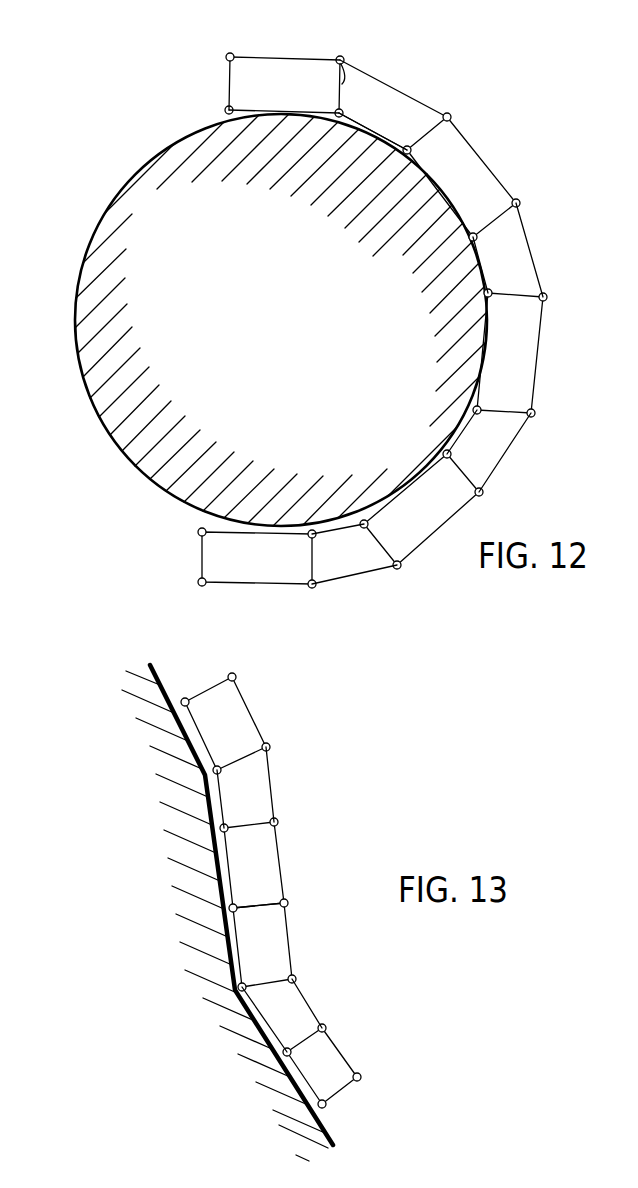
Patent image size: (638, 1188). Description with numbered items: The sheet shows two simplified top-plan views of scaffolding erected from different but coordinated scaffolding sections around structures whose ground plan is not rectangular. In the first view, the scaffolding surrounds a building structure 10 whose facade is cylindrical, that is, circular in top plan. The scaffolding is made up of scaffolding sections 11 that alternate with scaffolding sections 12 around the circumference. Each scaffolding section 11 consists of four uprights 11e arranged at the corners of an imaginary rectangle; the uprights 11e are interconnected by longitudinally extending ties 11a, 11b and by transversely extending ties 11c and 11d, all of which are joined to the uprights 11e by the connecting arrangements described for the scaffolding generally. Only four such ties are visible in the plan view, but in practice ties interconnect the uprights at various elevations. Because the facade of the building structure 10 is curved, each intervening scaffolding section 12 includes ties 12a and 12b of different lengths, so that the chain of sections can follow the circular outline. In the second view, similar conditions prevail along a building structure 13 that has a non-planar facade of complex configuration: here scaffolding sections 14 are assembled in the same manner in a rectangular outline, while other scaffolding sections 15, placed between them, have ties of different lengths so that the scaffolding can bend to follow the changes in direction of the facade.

In FIG. 12, the building structure 10 is at (198, 418).
In FIG. 12, the scaffolding section 11 is at (297, 55).
In FIG. 12, the longitudinally extending tie 11a is at (260, 56).
In FIG. 12, the longitudinally extending tie 11b is at (278, 114).
In FIG. 12, the transversely extending tie 11c is at (342, 84).
In FIG. 12, the transversely extending tie 11d is at (228, 85).
In FIG. 12, the upright 11e is at (227, 54).
In FIG. 12, the scaffolding section 12 is at (412, 89).
In FIG. 12, the tie 12a is at (447, 116).
In FIG. 12, the tie 12b is at (361, 133).
In FIG. 13, the building structure 13 is at (190, 803).
In FIG. 13, the scaffolding section 14 is at (251, 703).
In FIG. 13, the scaffolding section 15 is at (272, 783).